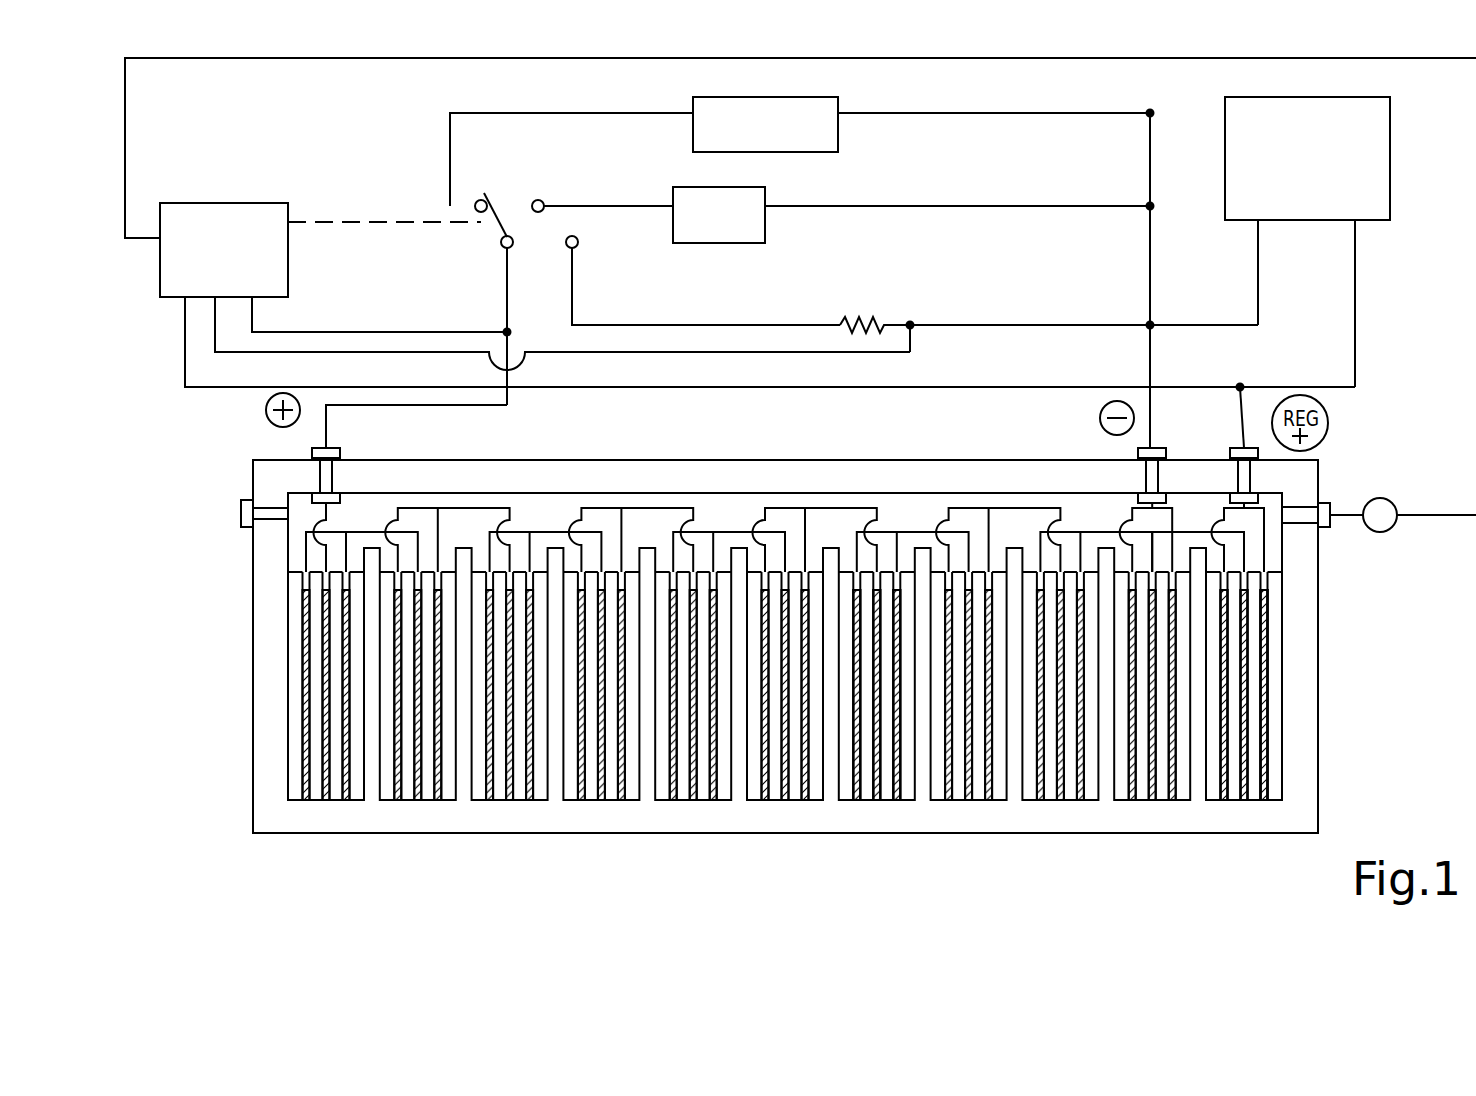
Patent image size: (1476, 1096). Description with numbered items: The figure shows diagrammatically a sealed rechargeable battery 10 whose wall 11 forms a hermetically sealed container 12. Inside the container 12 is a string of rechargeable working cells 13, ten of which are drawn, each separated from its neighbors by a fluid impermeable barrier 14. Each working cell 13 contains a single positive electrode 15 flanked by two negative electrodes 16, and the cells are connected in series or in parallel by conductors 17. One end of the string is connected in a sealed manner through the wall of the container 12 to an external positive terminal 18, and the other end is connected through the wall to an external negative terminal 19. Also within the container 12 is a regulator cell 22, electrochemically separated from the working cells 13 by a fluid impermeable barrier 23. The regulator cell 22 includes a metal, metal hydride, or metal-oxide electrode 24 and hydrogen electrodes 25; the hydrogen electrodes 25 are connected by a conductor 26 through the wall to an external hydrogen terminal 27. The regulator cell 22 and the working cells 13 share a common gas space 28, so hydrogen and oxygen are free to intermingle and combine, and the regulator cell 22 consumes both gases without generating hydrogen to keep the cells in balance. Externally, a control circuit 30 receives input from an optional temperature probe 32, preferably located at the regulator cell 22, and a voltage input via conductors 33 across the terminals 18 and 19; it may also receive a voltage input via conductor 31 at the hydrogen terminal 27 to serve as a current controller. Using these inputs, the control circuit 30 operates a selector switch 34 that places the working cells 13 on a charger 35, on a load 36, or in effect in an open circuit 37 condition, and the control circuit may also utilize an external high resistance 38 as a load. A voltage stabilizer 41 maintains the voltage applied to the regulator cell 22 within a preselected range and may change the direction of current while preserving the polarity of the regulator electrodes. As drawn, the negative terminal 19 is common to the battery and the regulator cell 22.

The sealed rechargeable battery 10 is at (804, 622).
The wall 11 is at (905, 473).
The container 12 is at (740, 466).
The working cell 13 is at (407, 788).
The fluid impermeable barrier 14 is at (832, 778).
The positive electrode 15 is at (875, 787).
The negative electrode 16 is at (857, 787).
The conductor 17 is at (428, 532).
The positive terminal 18 is at (338, 450).
The negative terminal 19 is at (1165, 448).
The regulator cell 22 is at (1268, 622).
The fluid impermeable barrier 23 is at (1200, 788).
The metal, metal hydride, or metal-oxide electrode 24 is at (1250, 702).
The hydrogen electrode 25 is at (1224, 677).
The conductor 26 is at (1267, 517).
The hydrogen terminal 27 is at (1250, 447).
The common gas space 28 is at (922, 507).
The control circuit 30 is at (223, 222).
The conductor 31 is at (702, 387).
The temperature probe 32 is at (1390, 532).
The conductors 33 is at (387, 352).
The selector switch 34 is at (495, 208).
The charger 35 is at (750, 103).
The load 36 is at (743, 197).
The open circuit 37 is at (572, 243).
The high resistance 38 is at (842, 320).
The voltage stabilizer 41 is at (1277, 107).